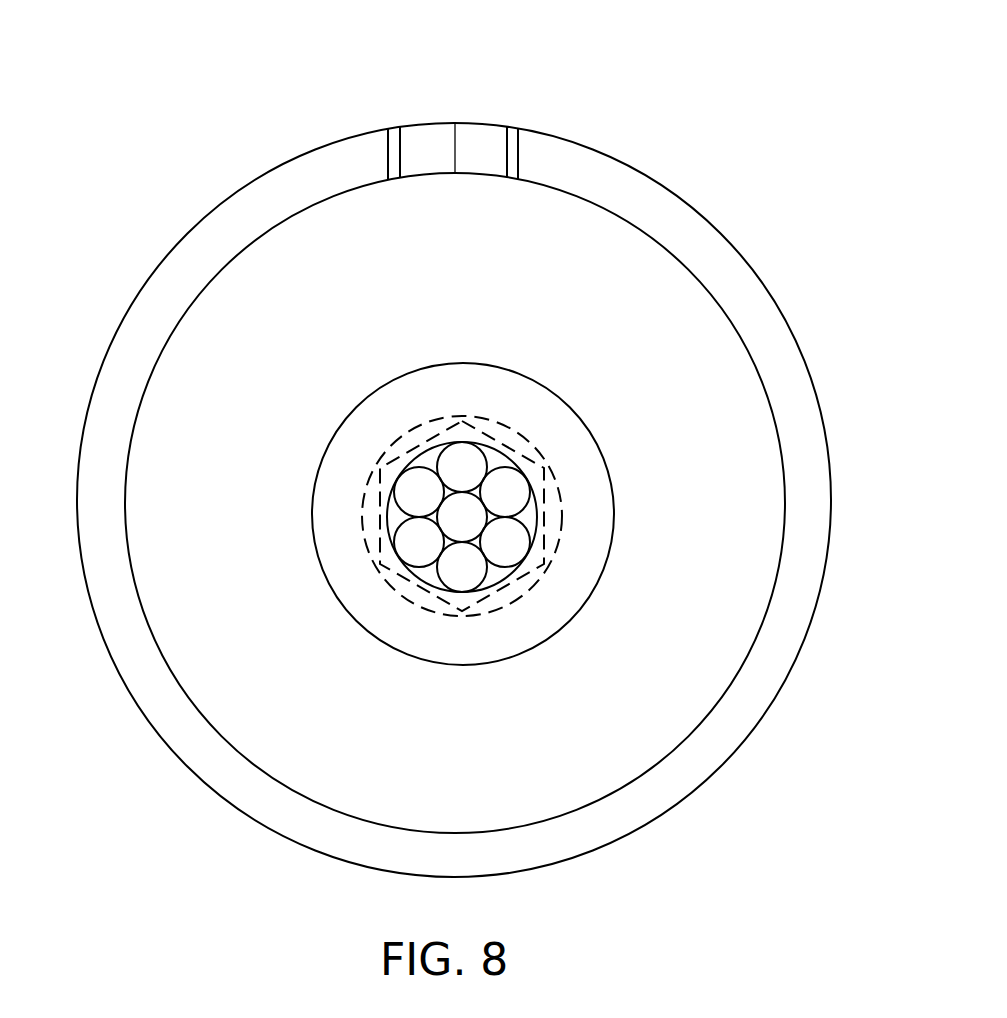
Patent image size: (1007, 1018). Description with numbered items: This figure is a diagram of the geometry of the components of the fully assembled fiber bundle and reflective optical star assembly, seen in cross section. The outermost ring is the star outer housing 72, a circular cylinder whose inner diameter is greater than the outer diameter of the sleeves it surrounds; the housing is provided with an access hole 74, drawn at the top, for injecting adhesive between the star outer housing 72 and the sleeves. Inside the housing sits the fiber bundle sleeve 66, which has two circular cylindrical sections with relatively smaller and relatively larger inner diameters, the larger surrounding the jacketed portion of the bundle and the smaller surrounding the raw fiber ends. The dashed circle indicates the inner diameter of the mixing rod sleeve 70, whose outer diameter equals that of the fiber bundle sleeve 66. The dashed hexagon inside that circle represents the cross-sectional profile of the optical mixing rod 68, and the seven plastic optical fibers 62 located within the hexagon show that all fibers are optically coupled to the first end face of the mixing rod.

The plastic optical fibers 62 is at (425, 499).
The fiber bundle sleeve 66 is at (757, 367).
The optical mixing rod 68 is at (377, 523).
The mixing rod sleeve 70 is at (395, 592).
The star outer housing 72 is at (715, 282).
The access hole 74 is at (460, 157).